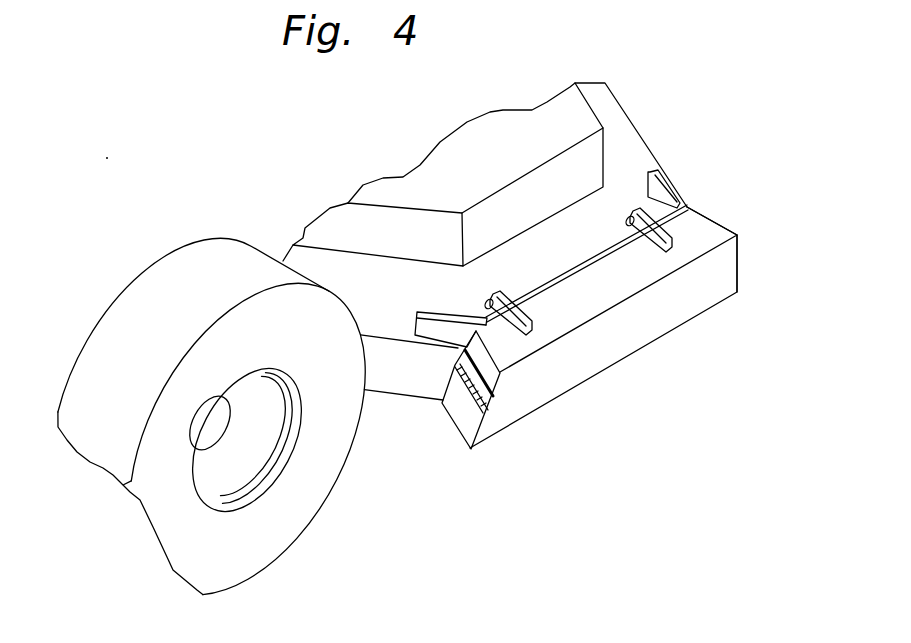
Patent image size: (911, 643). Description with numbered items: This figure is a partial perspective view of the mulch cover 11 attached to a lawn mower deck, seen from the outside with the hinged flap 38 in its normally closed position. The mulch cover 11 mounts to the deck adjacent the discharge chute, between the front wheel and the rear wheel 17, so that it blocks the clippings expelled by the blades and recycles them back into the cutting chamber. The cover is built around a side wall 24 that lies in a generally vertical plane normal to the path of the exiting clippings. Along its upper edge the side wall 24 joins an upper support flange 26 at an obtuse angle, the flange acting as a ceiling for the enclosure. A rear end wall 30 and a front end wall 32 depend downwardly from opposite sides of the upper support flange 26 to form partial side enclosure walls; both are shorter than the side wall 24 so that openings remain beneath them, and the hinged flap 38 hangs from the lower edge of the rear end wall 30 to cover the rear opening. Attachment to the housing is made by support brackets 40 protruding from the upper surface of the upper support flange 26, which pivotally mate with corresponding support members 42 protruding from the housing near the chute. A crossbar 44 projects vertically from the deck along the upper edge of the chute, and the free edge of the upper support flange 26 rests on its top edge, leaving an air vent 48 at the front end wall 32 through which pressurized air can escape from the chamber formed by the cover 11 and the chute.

The mulch cover 11 is at (462, 347).
The rear wheel 17 is at (250, 545).
The side wall 24 is at (662, 323).
The upper support flange 26 is at (692, 247).
The rear end wall 30 is at (490, 418).
The front end wall 32 is at (740, 277).
The hinged flap 38 is at (462, 416).
The support bracket 40 is at (665, 245).
The support member 42 is at (642, 213).
The crossbar 44 is at (668, 222).
The air vent 48 is at (447, 341).